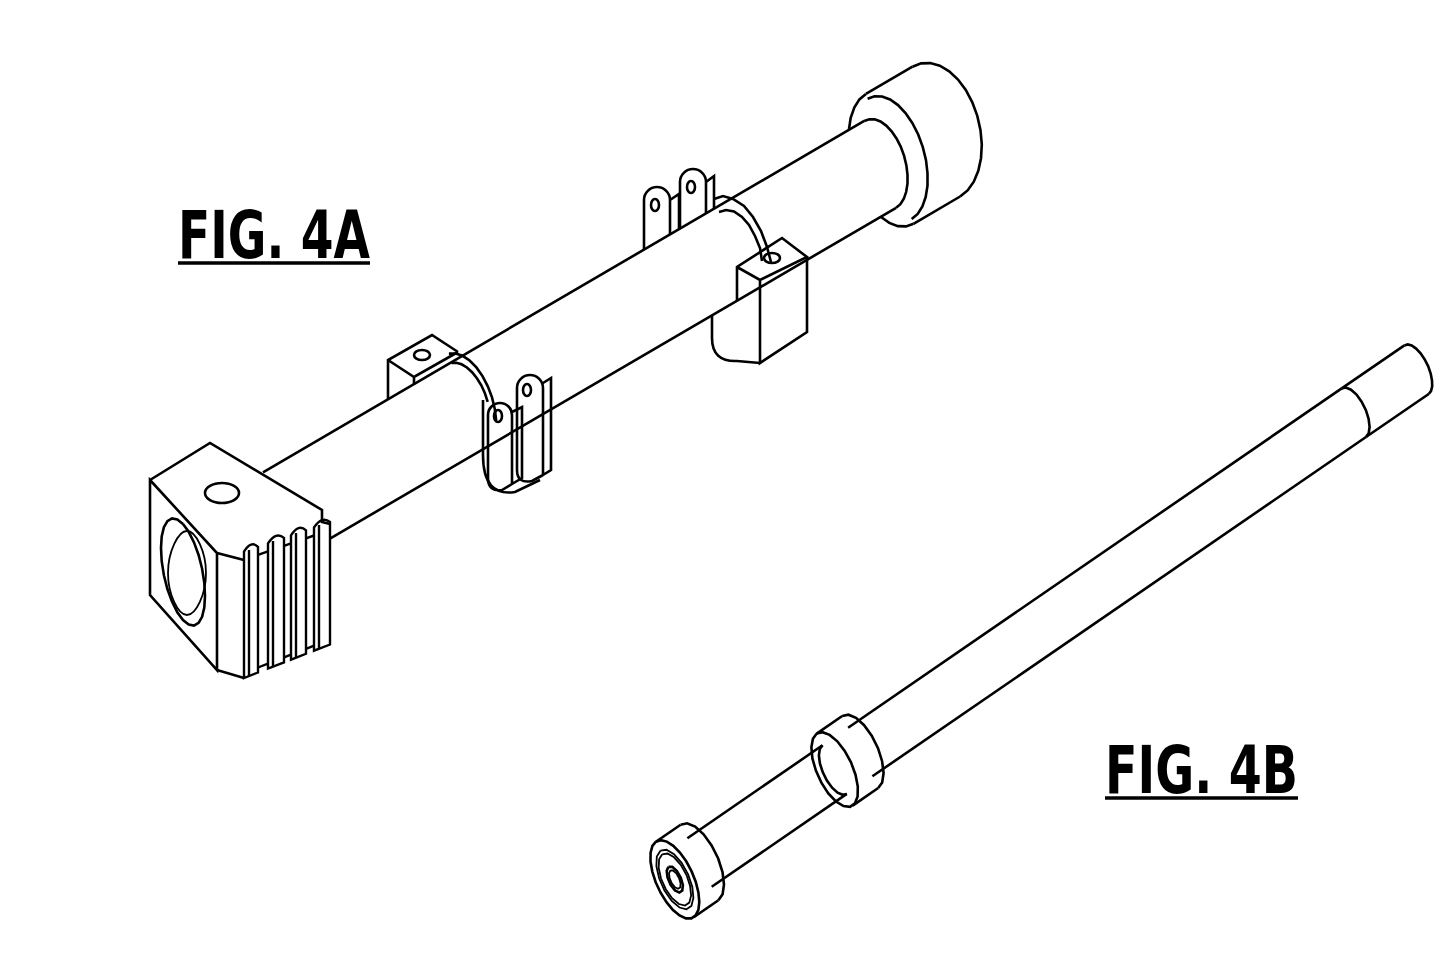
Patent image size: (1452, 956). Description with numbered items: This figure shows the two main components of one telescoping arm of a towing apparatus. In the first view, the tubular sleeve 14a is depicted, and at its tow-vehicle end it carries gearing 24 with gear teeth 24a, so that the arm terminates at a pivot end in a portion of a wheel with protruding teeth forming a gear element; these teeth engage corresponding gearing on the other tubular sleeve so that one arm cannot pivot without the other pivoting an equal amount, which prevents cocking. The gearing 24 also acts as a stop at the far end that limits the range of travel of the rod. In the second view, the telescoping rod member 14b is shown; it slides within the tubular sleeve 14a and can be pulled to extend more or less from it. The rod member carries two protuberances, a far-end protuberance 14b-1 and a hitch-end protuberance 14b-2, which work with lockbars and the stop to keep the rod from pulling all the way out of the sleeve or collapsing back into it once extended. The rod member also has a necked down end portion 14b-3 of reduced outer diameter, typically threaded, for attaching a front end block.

In FIG. 4A, the tubular sleeve 14a is at (605, 280).
In FIG. 4B, the telescoping rod member 14b is at (990, 632).
In FIG. 4B, the far-end protuberance 14b-1 is at (833, 727).
In FIG. 4B, the hitch-end protuberance 14b-2 is at (672, 837).
In FIG. 4B, the necked down end portion 14b-3 is at (1368, 368).
In FIG. 4A, the gearing 24 is at (296, 725).
In FIG. 4A, the gear teeth 24a is at (330, 607).